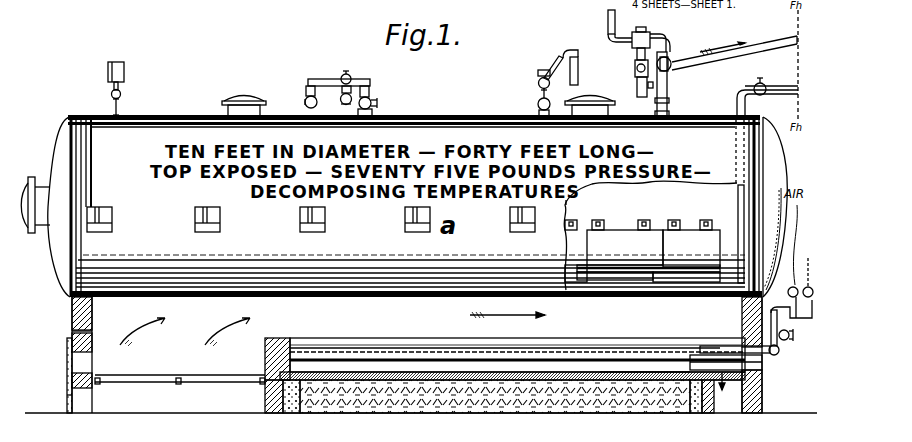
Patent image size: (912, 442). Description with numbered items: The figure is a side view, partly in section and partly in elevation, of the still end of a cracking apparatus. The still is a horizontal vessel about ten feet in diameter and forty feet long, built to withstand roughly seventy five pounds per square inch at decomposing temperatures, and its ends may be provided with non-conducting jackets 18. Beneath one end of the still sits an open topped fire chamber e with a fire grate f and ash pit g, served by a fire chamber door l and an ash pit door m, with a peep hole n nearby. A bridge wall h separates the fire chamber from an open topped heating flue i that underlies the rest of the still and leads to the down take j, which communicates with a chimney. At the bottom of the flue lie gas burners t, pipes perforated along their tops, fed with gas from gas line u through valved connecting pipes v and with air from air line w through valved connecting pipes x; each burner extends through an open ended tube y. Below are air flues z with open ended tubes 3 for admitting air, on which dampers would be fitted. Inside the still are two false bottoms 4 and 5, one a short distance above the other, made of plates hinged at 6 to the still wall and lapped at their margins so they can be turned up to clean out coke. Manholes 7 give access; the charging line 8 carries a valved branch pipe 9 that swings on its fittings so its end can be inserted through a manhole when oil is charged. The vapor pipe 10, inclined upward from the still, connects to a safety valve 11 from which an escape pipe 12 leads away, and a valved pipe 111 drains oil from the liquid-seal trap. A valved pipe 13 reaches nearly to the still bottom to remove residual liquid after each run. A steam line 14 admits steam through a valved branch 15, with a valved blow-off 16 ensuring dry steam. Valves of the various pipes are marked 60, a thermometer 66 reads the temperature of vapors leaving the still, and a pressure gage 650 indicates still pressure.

The open ended tube 3 is at (731, 372).
The false bottom 4 is at (653, 248).
The false bottom 5 is at (611, 285).
The hinge 6 is at (326, 213).
The manhole 7 is at (48, 196).
The charging line 8 is at (537, 104).
The valved branch pipe 9 is at (562, 60).
The vapor pipe 10 is at (668, 92).
The safety valve 11 is at (648, 34).
The valved pipe 111 is at (637, 82).
The escape pipe 12 is at (606, 20).
The valved pipe 13 is at (787, 94).
The steam line 14 is at (304, 102).
The valved branch 15 is at (368, 82).
The valved blow-off 16 is at (341, 101).
The non-conducting jacket 18 is at (60, 272).
The valve 60 is at (121, 94).
The thermometer 66 is at (670, 60).
The pressure gage 650 is at (124, 72).
The fire chamber e is at (142, 341).
The fire grate f is at (245, 382).
The ash pit g is at (180, 391).
The bridge wall h is at (287, 340).
The heating flue i is at (512, 341).
The down take j is at (745, 392).
The fire chamber door l is at (66, 358).
The ash pit door m is at (67, 395).
The peep hole n is at (93, 336).
The gas burner t is at (633, 348).
The gas line u is at (806, 268).
The valved connecting pipe v is at (789, 323).
The air line w is at (616, 366).
The valved connecting pipe x is at (756, 328).
The open ended tube y is at (731, 347).
The air flue z is at (667, 366).